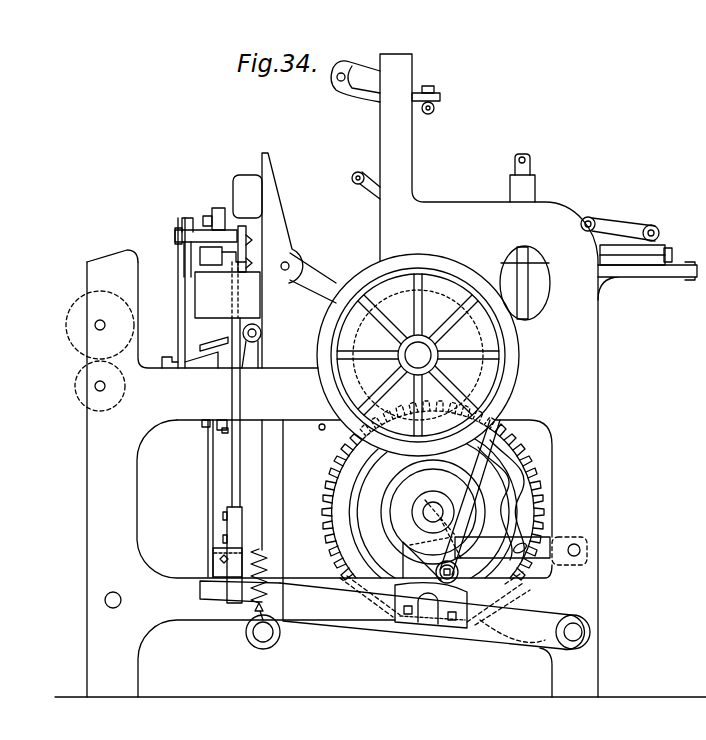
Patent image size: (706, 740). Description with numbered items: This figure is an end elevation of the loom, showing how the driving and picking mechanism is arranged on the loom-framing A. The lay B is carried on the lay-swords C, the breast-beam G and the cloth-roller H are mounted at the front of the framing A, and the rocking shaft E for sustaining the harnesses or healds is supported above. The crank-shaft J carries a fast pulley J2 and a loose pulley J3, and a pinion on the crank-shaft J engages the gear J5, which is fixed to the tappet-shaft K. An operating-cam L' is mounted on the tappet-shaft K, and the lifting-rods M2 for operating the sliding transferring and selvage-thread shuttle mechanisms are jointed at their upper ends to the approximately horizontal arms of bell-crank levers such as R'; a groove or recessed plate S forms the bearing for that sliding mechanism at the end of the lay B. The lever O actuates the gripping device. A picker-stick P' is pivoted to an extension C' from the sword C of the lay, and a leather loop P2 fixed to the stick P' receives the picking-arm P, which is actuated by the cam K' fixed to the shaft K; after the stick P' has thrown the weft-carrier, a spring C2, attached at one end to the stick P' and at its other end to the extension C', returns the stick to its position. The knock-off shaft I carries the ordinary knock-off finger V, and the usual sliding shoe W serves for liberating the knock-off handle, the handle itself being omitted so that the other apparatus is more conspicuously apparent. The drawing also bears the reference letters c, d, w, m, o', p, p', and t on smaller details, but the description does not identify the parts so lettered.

The loom-framing A is at (380, 375).
The lay B is at (227, 295).
The lay-swords C is at (272, 520).
The extension from the sword of the lay C' is at (282, 584).
The spring C2 is at (322, 518).
The rocking shaft E is at (344, 70).
The breast-beam G is at (112, 245).
The cloth-roller H is at (78, 380).
The knock-off shaft I is at (262, 340).
The crank-shaft J is at (393, 347).
The fast pulley J2 is at (372, 356).
The loose pulley J3 is at (500, 368).
The gear J5 is at (326, 488).
The tappet-shaft K is at (436, 508).
The cam K' is at (451, 501).
The operating-cam L' is at (427, 520).
The lifting-rod M2 is at (216, 498).
The lever O is at (521, 551).
The picking-arm P is at (395, 610).
The picker-stick P' is at (240, 432).
The leather loop P2 is at (245, 598).
The bell-crank lever R' is at (172, 293).
The groove or recessed plate S is at (247, 249).
The knock-off finger V is at (214, 337).
The sliding shoe W is at (187, 353).
The clamp c is at (222, 207).
The bolt d is at (187, 218).
The hole m is at (122, 600).
The opening o' is at (525, 283).
The post p is at (532, 176).
The rod p' is at (516, 283).
The lever t is at (626, 240).
The shaft w is at (206, 236).